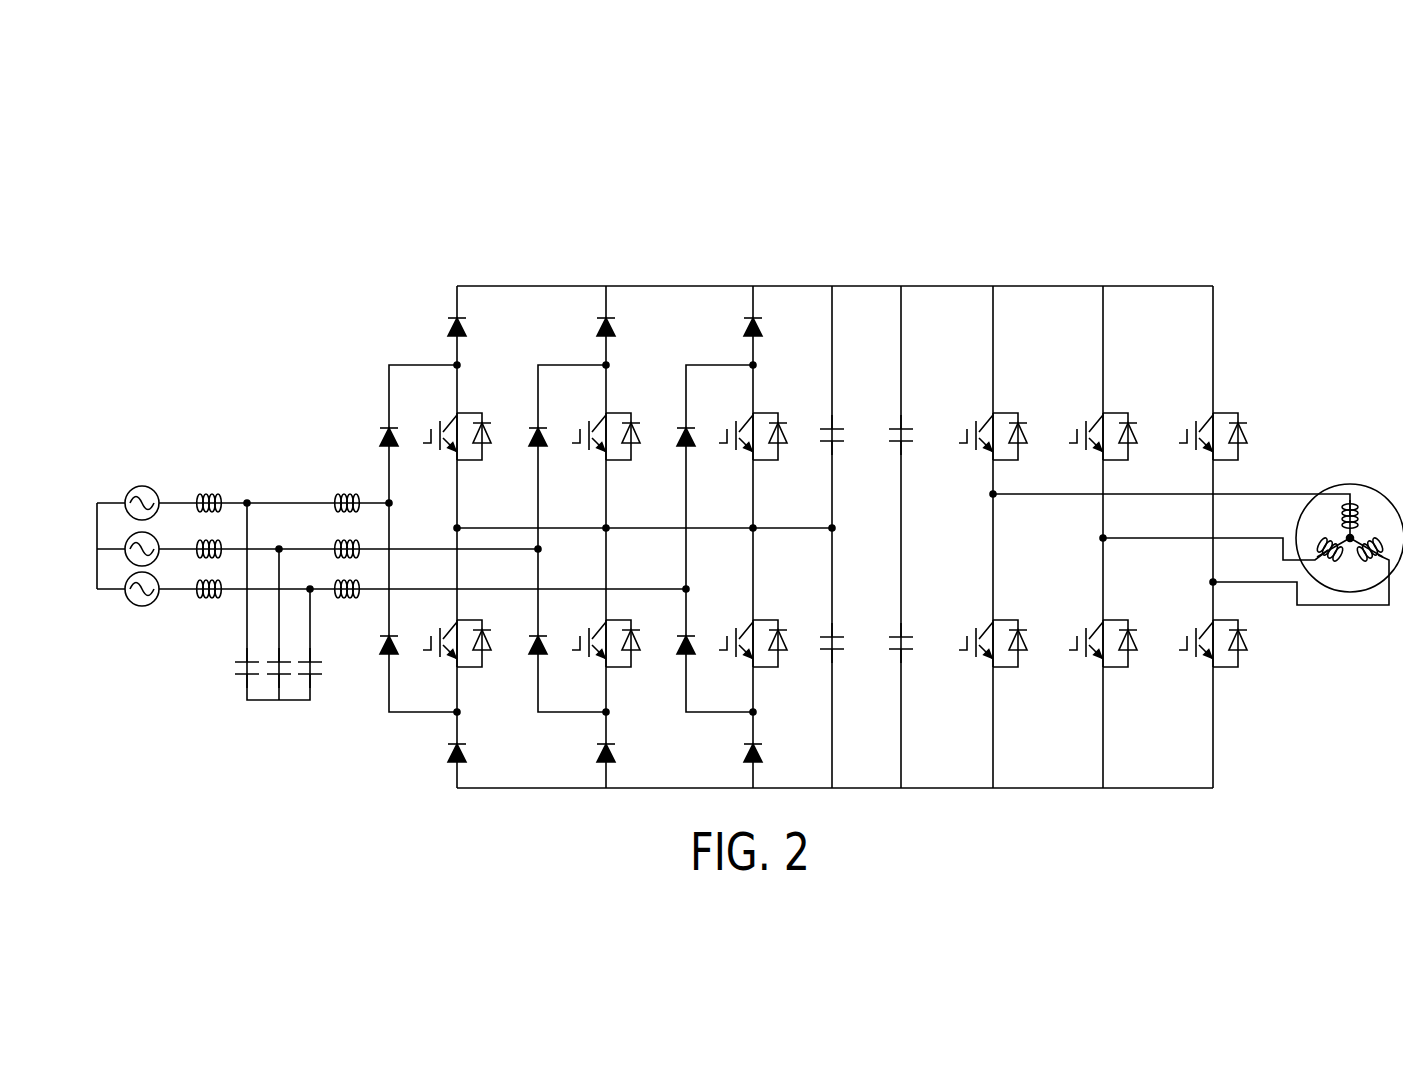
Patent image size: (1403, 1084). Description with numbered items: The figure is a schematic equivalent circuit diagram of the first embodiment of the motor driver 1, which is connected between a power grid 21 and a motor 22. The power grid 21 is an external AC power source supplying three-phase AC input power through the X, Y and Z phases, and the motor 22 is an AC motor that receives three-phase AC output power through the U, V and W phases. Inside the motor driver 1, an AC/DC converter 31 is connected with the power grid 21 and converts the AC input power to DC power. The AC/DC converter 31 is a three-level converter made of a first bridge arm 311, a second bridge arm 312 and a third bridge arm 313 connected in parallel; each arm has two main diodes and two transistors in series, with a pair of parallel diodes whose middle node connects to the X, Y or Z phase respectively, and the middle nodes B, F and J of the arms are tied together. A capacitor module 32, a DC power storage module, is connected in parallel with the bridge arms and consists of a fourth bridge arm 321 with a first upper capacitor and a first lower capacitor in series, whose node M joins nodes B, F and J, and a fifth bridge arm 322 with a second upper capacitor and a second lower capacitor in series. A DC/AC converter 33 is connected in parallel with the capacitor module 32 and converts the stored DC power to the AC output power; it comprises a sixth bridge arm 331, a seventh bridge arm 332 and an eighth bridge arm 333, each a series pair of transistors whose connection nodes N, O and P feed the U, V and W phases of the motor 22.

The motor driver 1 is at (1358, 207).
The power grid 21 is at (167, 465).
The motor 22 is at (1362, 485).
The AC/DC converter 31 is at (742, 188).
The first bridge arm 311 is at (430, 489).
The second bridge arm 312 is at (602, 489).
The third bridge arm 313 is at (750, 489).
The capacitor module 32 is at (940, 188).
The fourth bridge arm 321 is at (855, 489).
The fifth bridge arm 322 is at (924, 489).
The DC/AC converter 33 is at (1005, 188).
The sixth bridge arm 331 is at (1004, 489).
The seventh bridge arm 332 is at (1114, 489).
The eighth bridge arm 333 is at (1224, 489).